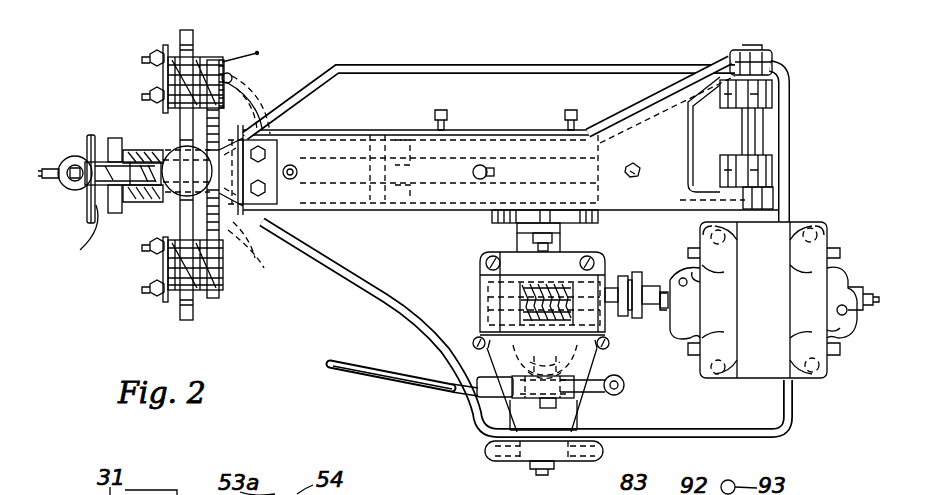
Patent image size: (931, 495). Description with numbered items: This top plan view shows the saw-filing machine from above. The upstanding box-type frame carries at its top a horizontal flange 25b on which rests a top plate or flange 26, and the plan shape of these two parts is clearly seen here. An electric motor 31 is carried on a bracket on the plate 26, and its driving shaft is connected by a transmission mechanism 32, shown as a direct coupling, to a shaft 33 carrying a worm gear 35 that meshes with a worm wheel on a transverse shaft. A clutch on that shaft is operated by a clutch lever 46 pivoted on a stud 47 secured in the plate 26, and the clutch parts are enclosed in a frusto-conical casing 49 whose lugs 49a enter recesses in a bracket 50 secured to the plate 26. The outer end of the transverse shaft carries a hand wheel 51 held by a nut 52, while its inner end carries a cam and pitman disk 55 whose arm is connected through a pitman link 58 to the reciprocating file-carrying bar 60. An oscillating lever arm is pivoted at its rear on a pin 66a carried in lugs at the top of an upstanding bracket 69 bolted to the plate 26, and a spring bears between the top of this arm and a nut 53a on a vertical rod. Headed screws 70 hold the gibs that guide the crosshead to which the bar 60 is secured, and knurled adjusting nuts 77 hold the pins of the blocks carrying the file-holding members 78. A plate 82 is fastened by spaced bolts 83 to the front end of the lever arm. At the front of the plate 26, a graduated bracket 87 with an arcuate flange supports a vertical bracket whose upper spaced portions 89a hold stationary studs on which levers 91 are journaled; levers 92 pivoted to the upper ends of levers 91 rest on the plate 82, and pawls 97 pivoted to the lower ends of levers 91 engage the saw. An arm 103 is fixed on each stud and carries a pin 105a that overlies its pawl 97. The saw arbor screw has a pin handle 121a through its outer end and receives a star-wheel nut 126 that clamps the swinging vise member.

The horizontal flange 25b is at (460, 68).
The top plate 26 is at (565, 86).
The motor 31 is at (806, 256).
The transmission mechanism 32 is at (623, 278).
The shaft 33 is at (503, 303).
The worm gear 35 is at (534, 283).
The clutch lever 46 is at (378, 369).
The stud 47 is at (625, 383).
The casing 49 is at (590, 358).
The lugs 49a is at (577, 402).
The bracket 50 is at (557, 418).
The hand wheel 51 is at (603, 452).
The nut 52 is at (553, 470).
The nut 53a is at (629, 167).
The cam and pitman disk 55 is at (565, 231).
The pitman link 58 is at (435, 167).
The file-carrying bar 60 is at (82, 235).
The pivot pin 66a is at (755, 126).
The upstanding bracket 69 is at (747, 100).
The headed screws 70 is at (570, 116).
The knurled adjusting nuts 77 is at (70, 162).
The file-holding members 78 is at (56, 177).
The plate 82 is at (177, 155).
The bolts 83 is at (290, 158).
The bracket 87 is at (252, 118).
The upper spaced portions 89a is at (257, 263).
The levers 91 is at (173, 97).
The levers 92 is at (167, 113).
The pawls 97 is at (190, 30).
The arm 103 is at (163, 44).
The cylindrical pin 105a is at (194, 66).
The pin handle 121a is at (90, 128).
The nut 126 is at (112, 135).